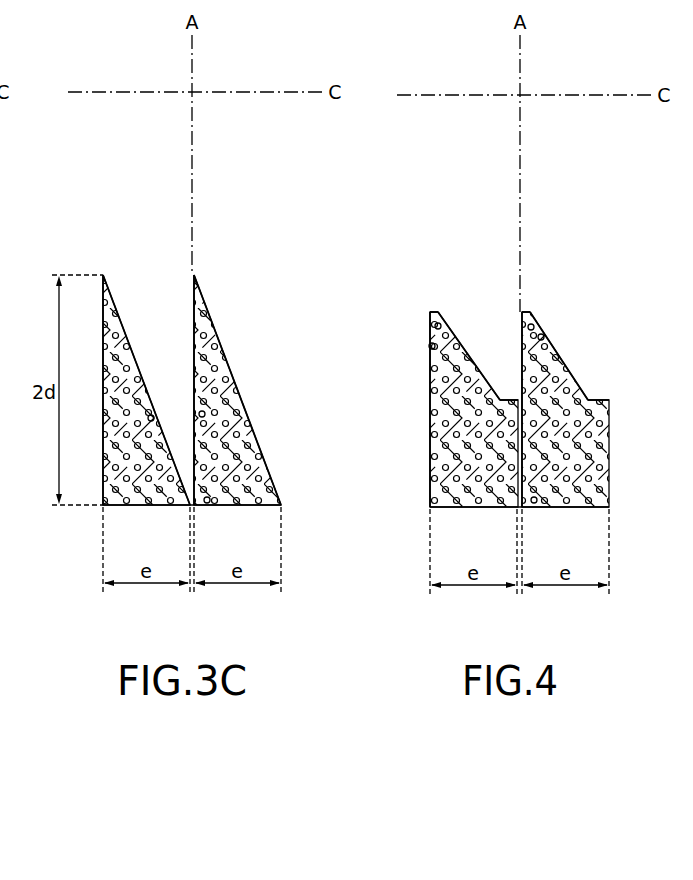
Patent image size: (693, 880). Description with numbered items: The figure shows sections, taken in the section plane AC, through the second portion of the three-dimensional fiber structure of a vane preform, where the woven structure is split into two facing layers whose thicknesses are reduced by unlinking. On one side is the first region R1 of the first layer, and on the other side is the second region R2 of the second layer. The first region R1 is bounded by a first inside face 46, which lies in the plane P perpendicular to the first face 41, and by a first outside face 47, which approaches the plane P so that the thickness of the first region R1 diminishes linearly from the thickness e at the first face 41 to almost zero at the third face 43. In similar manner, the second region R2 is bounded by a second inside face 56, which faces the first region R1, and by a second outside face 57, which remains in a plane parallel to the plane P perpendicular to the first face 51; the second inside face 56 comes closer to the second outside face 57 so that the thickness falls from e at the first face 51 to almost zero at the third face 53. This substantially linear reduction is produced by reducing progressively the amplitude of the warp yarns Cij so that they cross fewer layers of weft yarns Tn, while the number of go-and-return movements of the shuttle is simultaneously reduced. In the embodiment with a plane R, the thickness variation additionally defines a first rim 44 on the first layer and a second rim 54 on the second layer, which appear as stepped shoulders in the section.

In FIG. 3C, the first face 41 is at (225, 507).
In FIG. 4, the first face 41 is at (557, 508).
In FIG. 4, the third face 43 is at (527, 311).
In FIG. 4, the first rim 44 is at (600, 400).
In FIG. 3C, the first inside face 46 is at (194, 362).
In FIG. 4, the first inside face 46 is at (521, 345).
In FIG. 3C, the first outside face 47 is at (214, 324).
In FIG. 4, the first outside face 47 is at (562, 355).
In FIG. 3C, the first face 51 is at (122, 507).
In FIG. 4, the first face 51 is at (450, 508).
In FIG. 4, the third face 53 is at (433, 311).
In FIG. 4, the second rim 54 is at (506, 400).
In FIG. 3C, the second inside face 56 is at (115, 302).
In FIG. 4, the second inside face 56 is at (446, 326).
In FIG. 3C, the second outside face 57 is at (103, 420).
In FIG. 4, the second outside face 57 is at (430, 420).
In FIG. 3C, the first region R1 is at (247, 385).
In FIG. 3C, the second region R2 is at (140, 330).
In FIG. 3C, the weft yarns Tn is at (153, 416).
In FIG. 4, the weft yarns Tn is at (435, 327).
In FIG. 3C, the warp yarns Cij is at (206, 507).
In FIG. 4, the warp yarns Cij is at (534, 508).